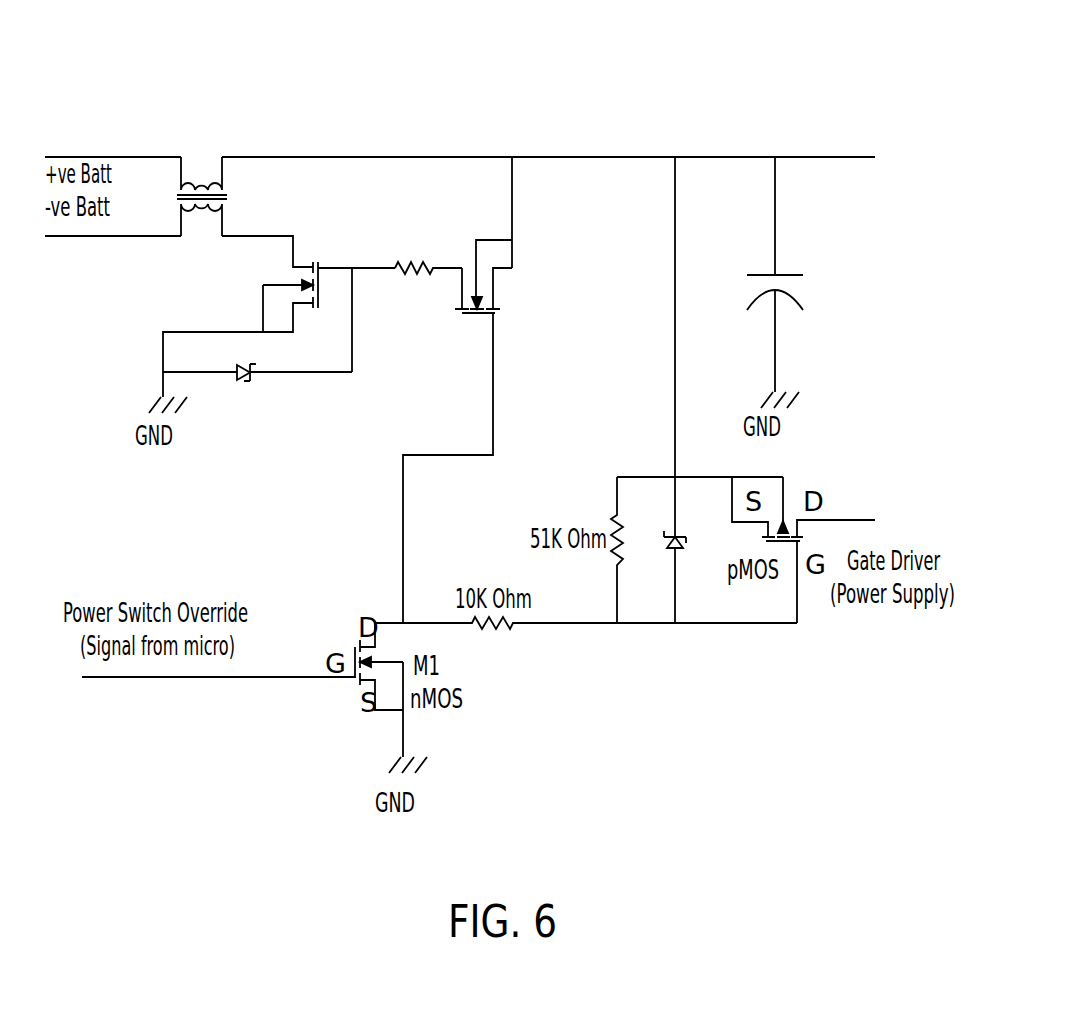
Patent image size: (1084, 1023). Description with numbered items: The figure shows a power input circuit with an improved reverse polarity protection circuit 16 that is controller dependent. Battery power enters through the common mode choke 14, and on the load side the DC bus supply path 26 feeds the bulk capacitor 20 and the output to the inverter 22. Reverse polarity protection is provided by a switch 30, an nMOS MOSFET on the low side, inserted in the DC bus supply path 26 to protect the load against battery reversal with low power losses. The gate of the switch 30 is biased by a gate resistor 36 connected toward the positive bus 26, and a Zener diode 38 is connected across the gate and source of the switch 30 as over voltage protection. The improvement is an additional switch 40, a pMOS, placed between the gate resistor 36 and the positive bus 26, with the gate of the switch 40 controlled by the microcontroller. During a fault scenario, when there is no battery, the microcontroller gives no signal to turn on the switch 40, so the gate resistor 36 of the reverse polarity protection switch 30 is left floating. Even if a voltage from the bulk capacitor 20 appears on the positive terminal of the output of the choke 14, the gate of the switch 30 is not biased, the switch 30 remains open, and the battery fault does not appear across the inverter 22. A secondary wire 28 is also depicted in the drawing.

The common mode choke 14 is at (192, 178).
The reverse polarity protection circuit 16 is at (494, 110).
The bulk capacitor 20 is at (782, 273).
The inverter 22 is at (860, 171).
The DC bus supply path 26 is at (254, 157).
The secondary winding line 28 is at (230, 237).
The switch 30 is at (317, 293).
The resistor 36 is at (410, 262).
The Zener diode 38 is at (246, 382).
The switch 40 is at (478, 315).